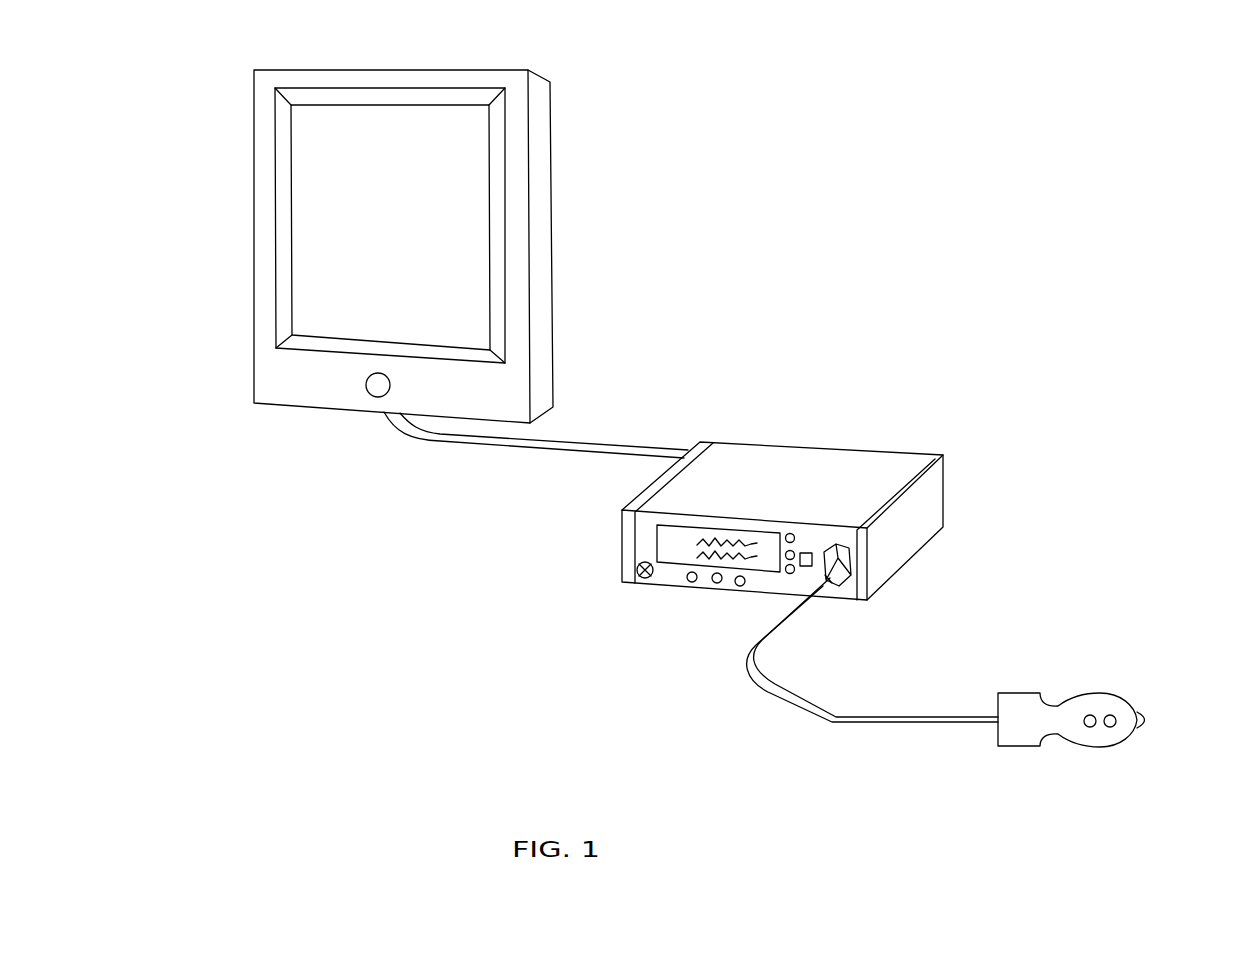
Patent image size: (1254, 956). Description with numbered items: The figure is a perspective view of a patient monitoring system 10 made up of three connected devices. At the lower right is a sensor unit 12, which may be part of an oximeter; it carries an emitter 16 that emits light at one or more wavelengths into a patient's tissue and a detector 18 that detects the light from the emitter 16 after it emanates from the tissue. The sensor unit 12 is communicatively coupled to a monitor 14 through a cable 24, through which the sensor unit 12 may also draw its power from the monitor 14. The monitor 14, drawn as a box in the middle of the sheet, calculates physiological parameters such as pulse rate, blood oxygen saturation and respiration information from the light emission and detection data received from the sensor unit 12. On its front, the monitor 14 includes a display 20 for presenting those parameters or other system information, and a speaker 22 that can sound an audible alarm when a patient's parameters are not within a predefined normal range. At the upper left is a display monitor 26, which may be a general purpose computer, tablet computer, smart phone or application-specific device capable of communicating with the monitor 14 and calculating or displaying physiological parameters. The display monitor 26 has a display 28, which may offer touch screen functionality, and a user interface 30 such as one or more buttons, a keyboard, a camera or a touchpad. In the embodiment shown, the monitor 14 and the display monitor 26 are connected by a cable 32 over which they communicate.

The patient monitoring system 10 is at (800, 222).
The sensor unit 12 is at (1098, 708).
The monitor 14 is at (775, 532).
The emitter 16 is at (1085, 740).
The detector 18 is at (1114, 730).
The display 20 is at (685, 575).
The speaker 22 is at (641, 584).
The cable 24 is at (766, 688).
The display monitor 26 is at (390, 273).
The display 28 is at (290, 295).
The user interface 30 is at (369, 394).
The cable 32 is at (590, 437).